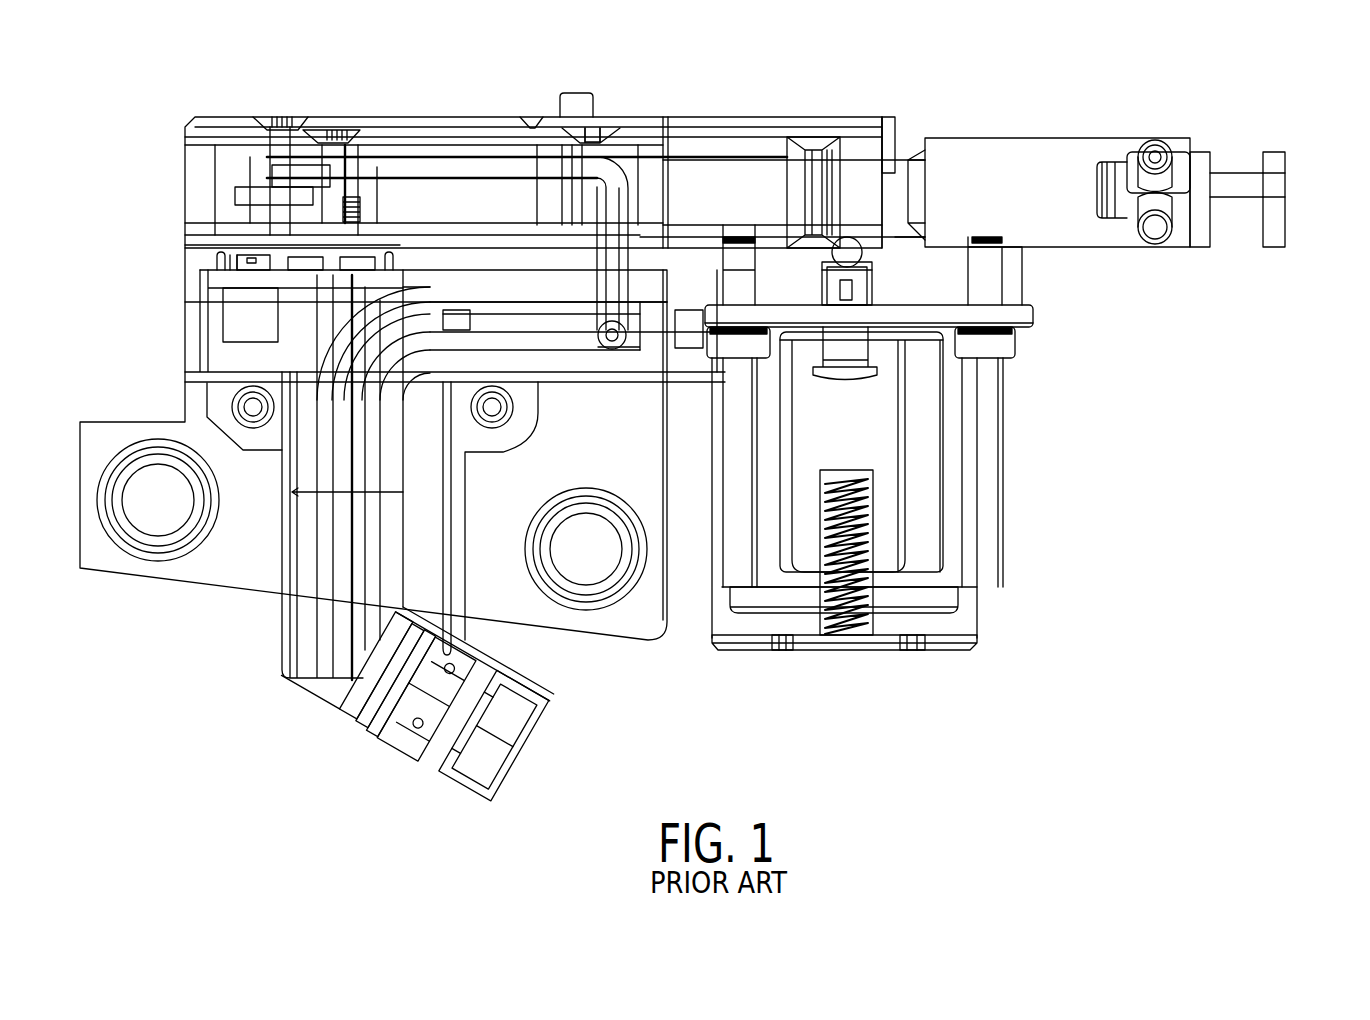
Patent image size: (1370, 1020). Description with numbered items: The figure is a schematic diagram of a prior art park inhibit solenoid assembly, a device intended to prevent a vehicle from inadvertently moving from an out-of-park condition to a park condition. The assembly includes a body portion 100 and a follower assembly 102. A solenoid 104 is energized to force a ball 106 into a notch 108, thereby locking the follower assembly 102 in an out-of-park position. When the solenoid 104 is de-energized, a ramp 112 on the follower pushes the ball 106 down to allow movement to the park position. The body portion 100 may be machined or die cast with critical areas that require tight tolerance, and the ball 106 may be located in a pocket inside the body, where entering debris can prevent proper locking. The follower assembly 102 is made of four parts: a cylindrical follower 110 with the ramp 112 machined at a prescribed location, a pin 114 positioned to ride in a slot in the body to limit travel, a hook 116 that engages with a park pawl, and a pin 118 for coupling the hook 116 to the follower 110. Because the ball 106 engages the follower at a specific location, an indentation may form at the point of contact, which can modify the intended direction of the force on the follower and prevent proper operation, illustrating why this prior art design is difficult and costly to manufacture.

The body portion 100 is at (458, 116).
The follower assembly 102 is at (937, 131).
The solenoid 104 is at (978, 571).
The ball 106 is at (876, 268).
The notch 108 is at (854, 233).
The cylindrical follower 110 is at (1112, 140).
The ramp 112 is at (913, 150).
The pin 114 is at (577, 105).
The hook 116 is at (1285, 222).
The pin 118 is at (1157, 158).